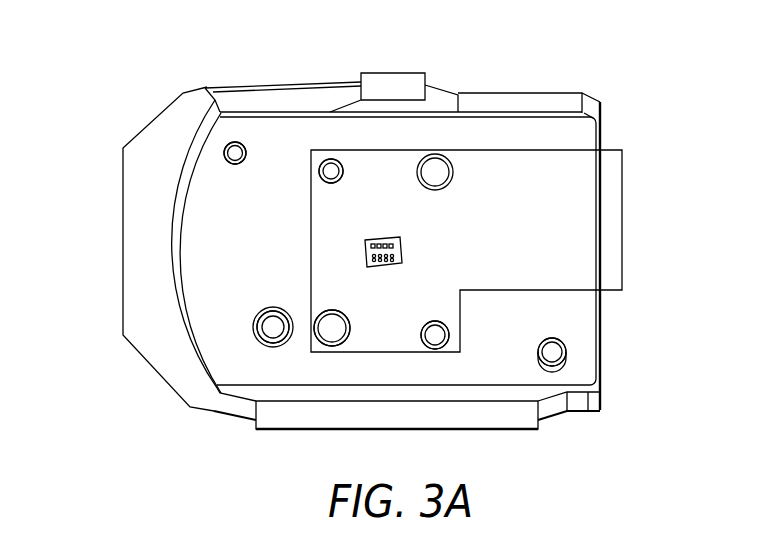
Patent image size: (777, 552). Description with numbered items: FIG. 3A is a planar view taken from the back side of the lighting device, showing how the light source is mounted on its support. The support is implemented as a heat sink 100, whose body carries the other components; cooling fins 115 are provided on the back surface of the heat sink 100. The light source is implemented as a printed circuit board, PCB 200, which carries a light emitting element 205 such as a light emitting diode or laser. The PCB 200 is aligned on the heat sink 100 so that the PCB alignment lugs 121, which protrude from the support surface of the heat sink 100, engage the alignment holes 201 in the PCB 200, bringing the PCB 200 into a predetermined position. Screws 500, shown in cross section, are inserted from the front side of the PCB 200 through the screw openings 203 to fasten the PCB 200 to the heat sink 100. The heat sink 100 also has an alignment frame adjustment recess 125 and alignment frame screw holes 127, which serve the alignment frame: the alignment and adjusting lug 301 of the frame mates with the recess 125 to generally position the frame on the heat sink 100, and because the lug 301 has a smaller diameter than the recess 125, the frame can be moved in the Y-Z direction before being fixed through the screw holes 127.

The heat sink 100 is at (240, 86).
The cooling fins 115 is at (130, 232).
The PCB alignment lugs 121 is at (338, 162).
The alignment frame adjustment recess 125 is at (282, 307).
The alignment frame screw holes 127 is at (243, 160).
The printed circuit board 200 is at (562, 233).
The alignment holes 201 is at (321, 164).
The screw openings 203 is at (333, 310).
The light emitting element 205 is at (378, 238).
The alignment and adjusting lug 301 is at (259, 313).
The screws 500 is at (228, 160).